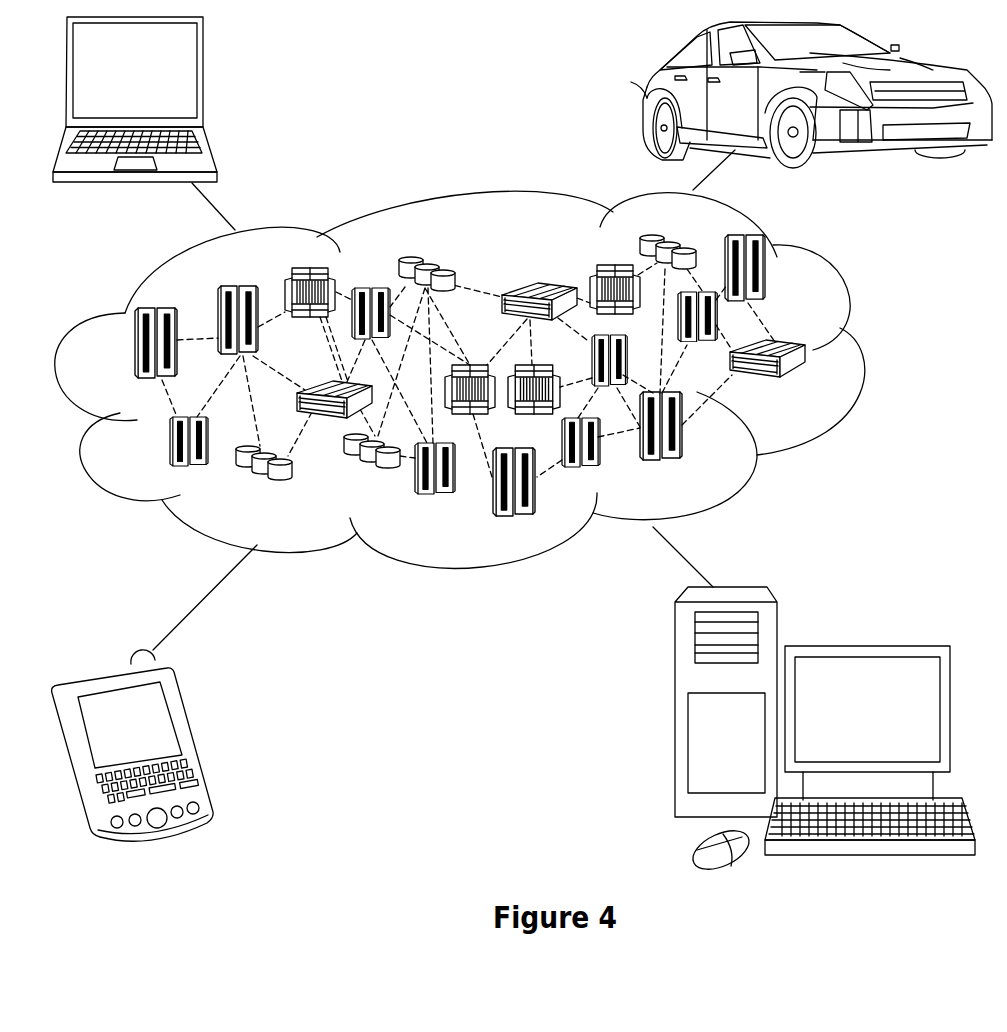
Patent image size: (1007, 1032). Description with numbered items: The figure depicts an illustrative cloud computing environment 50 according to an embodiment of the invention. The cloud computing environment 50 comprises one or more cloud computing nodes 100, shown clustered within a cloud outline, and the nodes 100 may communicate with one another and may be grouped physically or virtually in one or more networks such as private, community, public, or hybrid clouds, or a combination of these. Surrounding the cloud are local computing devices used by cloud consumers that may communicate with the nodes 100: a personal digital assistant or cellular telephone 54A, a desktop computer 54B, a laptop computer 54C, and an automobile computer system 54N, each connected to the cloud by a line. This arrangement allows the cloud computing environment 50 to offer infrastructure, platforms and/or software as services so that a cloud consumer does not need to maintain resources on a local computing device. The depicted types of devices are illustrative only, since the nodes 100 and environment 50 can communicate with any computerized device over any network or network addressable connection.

The cloud computing environment 50 is at (863, 353).
The cloud computing nodes 100 is at (807, 383).
The personal digital assistant (PDA) or cellular telephone 54A is at (193, 742).
The desktop computer 54B is at (867, 642).
The laptop computer 54C is at (205, 80).
The automobile computer system 54N is at (645, 97).